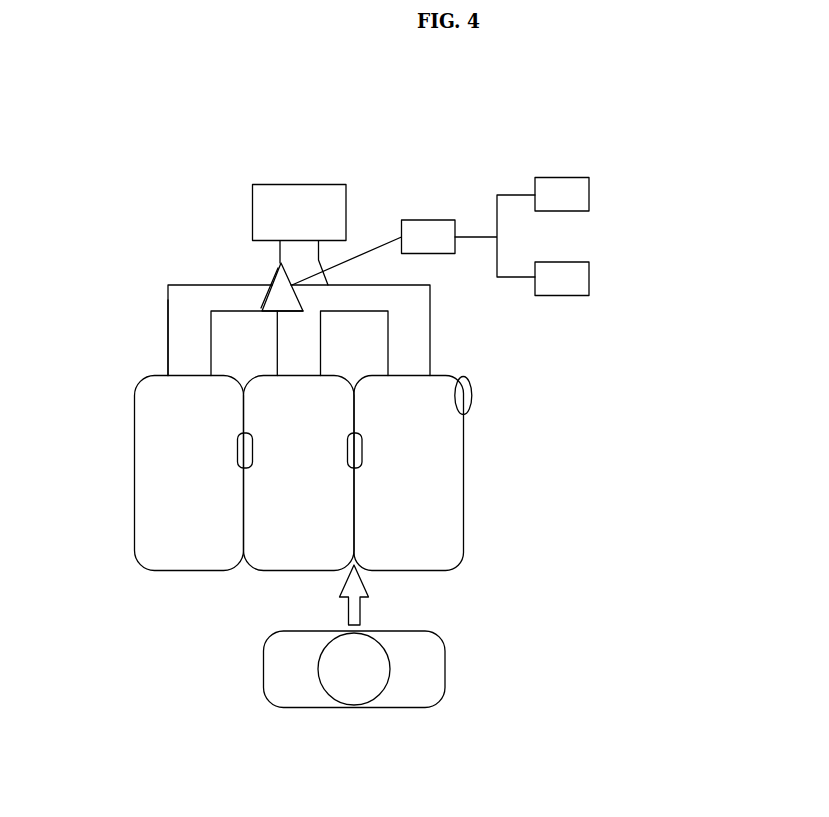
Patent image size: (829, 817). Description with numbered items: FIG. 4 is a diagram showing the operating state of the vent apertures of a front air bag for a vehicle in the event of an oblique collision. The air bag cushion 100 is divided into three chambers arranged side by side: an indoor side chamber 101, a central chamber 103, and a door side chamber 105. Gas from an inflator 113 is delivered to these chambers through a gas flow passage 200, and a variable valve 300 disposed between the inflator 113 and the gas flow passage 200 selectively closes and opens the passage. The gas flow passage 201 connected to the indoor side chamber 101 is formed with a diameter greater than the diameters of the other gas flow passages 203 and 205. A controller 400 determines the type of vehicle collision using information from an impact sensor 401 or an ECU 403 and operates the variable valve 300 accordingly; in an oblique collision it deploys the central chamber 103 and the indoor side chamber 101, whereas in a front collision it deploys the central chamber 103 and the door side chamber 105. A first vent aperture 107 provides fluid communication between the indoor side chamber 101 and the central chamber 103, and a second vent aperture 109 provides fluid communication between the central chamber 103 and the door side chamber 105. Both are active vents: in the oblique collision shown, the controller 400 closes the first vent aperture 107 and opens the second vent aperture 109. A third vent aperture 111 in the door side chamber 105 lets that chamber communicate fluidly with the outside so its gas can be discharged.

The air bag cushion 100 is at (480, 568).
The indoor side chamber 101 is at (135, 502).
The central chamber 103 is at (265, 571).
The door side chamber 105 is at (465, 500).
The first vent aperture 107 is at (243, 450).
The second vent aperture 109 is at (362, 450).
The third vent aperture 111 is at (468, 406).
The inflator 113 is at (300, 193).
The gas flow passage 200 is at (229, 278).
The gas flow passage 201 is at (185, 360).
The gas flow passage 203 is at (293, 328).
The gas flow passage 205 is at (415, 330).
The variable valve 300 is at (280, 302).
The controller 400 is at (428, 219).
The impact sensor 401 is at (589, 190).
The ECU 403 is at (589, 277).